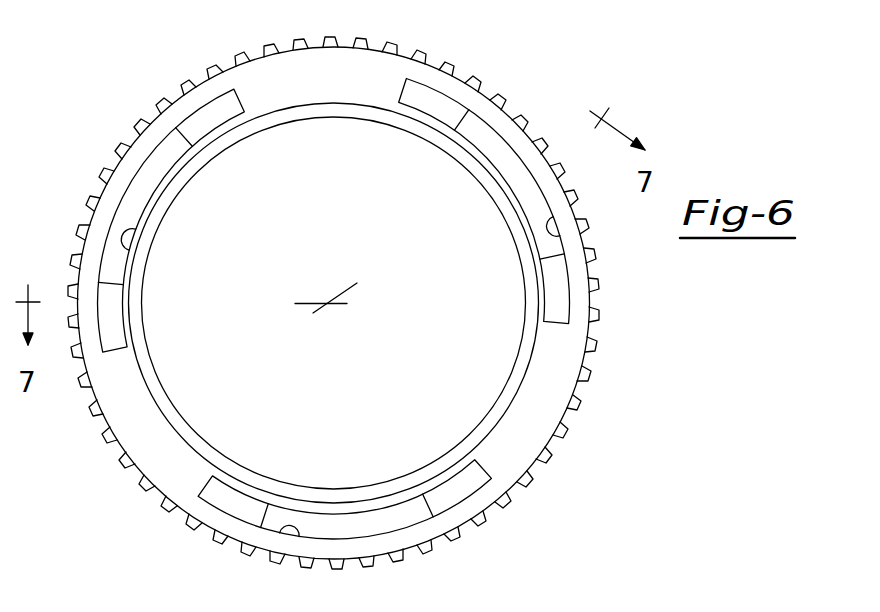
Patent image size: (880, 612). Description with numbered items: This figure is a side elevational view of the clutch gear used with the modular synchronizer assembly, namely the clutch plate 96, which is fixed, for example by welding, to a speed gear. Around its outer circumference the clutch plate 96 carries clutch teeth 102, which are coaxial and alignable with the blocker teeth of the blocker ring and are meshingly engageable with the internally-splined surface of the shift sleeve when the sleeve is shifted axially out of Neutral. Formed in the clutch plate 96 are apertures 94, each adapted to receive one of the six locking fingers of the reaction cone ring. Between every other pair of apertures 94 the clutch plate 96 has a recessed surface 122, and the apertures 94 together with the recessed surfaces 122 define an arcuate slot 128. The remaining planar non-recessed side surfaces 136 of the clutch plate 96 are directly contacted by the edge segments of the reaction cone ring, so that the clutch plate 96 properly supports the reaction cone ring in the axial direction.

The aperture 94 is at (212, 113).
The clutch plate 96 is at (553, 348).
The clutch teeth 102 is at (330, 42).
The recessed surface 122 is at (87, 197).
The arcuate slot 128 is at (560, 230).
The planar non-recessed side surface 136 is at (325, 73).